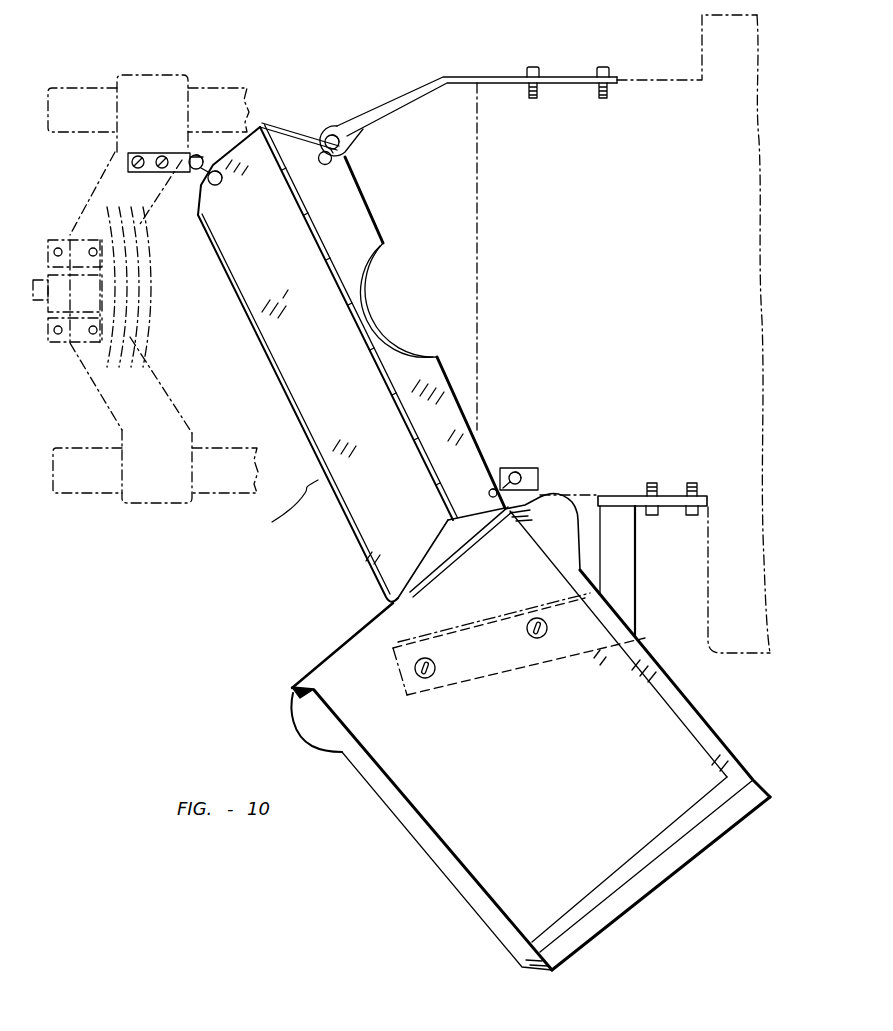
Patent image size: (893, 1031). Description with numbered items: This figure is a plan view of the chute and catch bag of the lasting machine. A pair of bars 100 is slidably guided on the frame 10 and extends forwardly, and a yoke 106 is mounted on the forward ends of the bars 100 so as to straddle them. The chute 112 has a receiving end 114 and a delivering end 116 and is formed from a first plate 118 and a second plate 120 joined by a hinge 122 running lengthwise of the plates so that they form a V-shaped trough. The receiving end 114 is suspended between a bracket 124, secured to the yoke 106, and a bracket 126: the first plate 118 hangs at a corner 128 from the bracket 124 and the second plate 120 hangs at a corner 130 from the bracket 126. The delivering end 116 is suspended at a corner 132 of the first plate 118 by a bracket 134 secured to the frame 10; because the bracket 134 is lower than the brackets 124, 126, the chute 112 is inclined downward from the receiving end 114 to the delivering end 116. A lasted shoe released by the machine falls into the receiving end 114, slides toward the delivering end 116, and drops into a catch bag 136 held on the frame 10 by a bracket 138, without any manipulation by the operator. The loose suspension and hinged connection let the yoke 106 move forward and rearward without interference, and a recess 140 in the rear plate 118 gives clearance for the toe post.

The frame 10 is at (671, 103).
The bars 100 is at (210, 478).
The yoke 106 is at (150, 422).
The chute 112 is at (320, 478).
The receiving end 114 is at (316, 365).
The delivering end 116 is at (418, 548).
The first plate 118 is at (382, 321).
The second plate 120 is at (246, 306).
The hinge 122 is at (260, 223).
The bracket 124 is at (416, 94).
The bracket 126 is at (147, 156).
The corner 128 is at (336, 172).
The corner 130 is at (225, 163).
The corner 132 is at (481, 470).
The bracket 134 is at (529, 473).
The catch bag 136 is at (536, 759).
The bracket 138 is at (622, 553).
The recess 140 is at (369, 288).